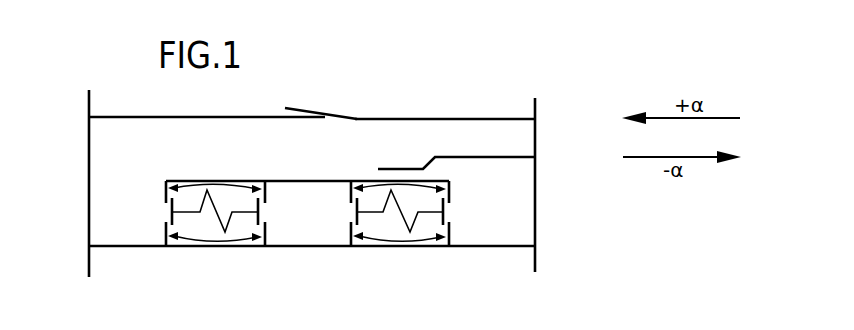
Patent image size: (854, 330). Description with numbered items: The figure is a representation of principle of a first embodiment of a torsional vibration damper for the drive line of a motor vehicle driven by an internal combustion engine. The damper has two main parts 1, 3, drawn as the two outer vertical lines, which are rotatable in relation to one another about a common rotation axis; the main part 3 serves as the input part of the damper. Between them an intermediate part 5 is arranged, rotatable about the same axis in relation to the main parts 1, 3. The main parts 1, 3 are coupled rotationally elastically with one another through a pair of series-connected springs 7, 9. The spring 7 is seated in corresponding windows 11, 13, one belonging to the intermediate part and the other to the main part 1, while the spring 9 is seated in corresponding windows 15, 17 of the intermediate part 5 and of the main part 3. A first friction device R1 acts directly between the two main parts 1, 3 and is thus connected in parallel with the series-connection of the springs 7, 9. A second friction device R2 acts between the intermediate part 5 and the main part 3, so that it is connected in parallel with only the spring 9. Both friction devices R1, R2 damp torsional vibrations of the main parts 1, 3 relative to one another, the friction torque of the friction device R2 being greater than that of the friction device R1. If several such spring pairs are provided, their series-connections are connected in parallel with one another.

The main part 1 is at (89, 152).
The main part 3 is at (535, 193).
The intermediate part 5 is at (285, 180).
The spring 7 is at (203, 205).
The spring 9 is at (411, 216).
The window 11 is at (212, 181).
The window 13 is at (208, 248).
The window 15 is at (370, 182).
The window 17 is at (396, 248).
The first friction device R1 is at (328, 108).
The second friction device R2 is at (403, 163).